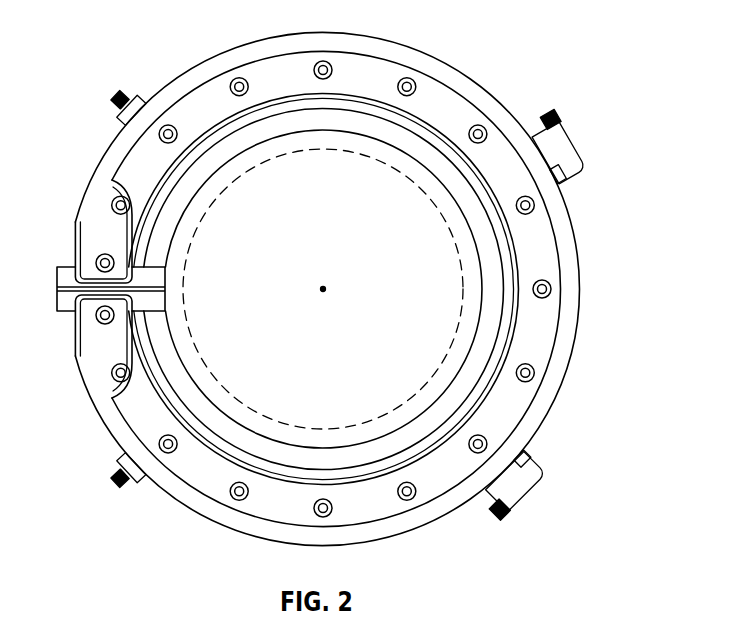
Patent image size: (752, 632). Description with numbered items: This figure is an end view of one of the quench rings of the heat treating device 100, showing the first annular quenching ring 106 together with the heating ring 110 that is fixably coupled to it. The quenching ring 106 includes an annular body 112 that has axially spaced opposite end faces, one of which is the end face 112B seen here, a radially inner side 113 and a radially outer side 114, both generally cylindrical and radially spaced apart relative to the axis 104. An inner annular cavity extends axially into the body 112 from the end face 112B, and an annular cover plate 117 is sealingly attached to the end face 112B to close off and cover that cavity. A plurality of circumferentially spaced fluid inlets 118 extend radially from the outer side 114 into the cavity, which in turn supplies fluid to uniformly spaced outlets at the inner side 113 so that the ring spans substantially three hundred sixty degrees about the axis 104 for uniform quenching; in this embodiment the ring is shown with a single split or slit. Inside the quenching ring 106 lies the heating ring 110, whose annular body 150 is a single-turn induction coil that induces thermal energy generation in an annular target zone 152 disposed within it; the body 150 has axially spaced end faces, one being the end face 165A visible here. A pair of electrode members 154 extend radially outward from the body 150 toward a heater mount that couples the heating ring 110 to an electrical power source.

The clamp assembly 100 is at (120, 33).
The axis 104 is at (323, 289).
The first annular quenching ring 106 is at (262, 44).
The heating ring 110 is at (170, 322).
The annular body 112 is at (500, 108).
The end face 112B is at (445, 106).
The radially inner side 113 is at (508, 297).
The radially outer side 114 is at (593, 289).
The annular cover plate 117 is at (547, 337).
The fluid inlets 118 is at (118, 488).
The annular body 150 is at (173, 352).
The annular target zone 152 is at (300, 427).
The electrode members 154 is at (63, 270).
The end face 165A is at (215, 409).